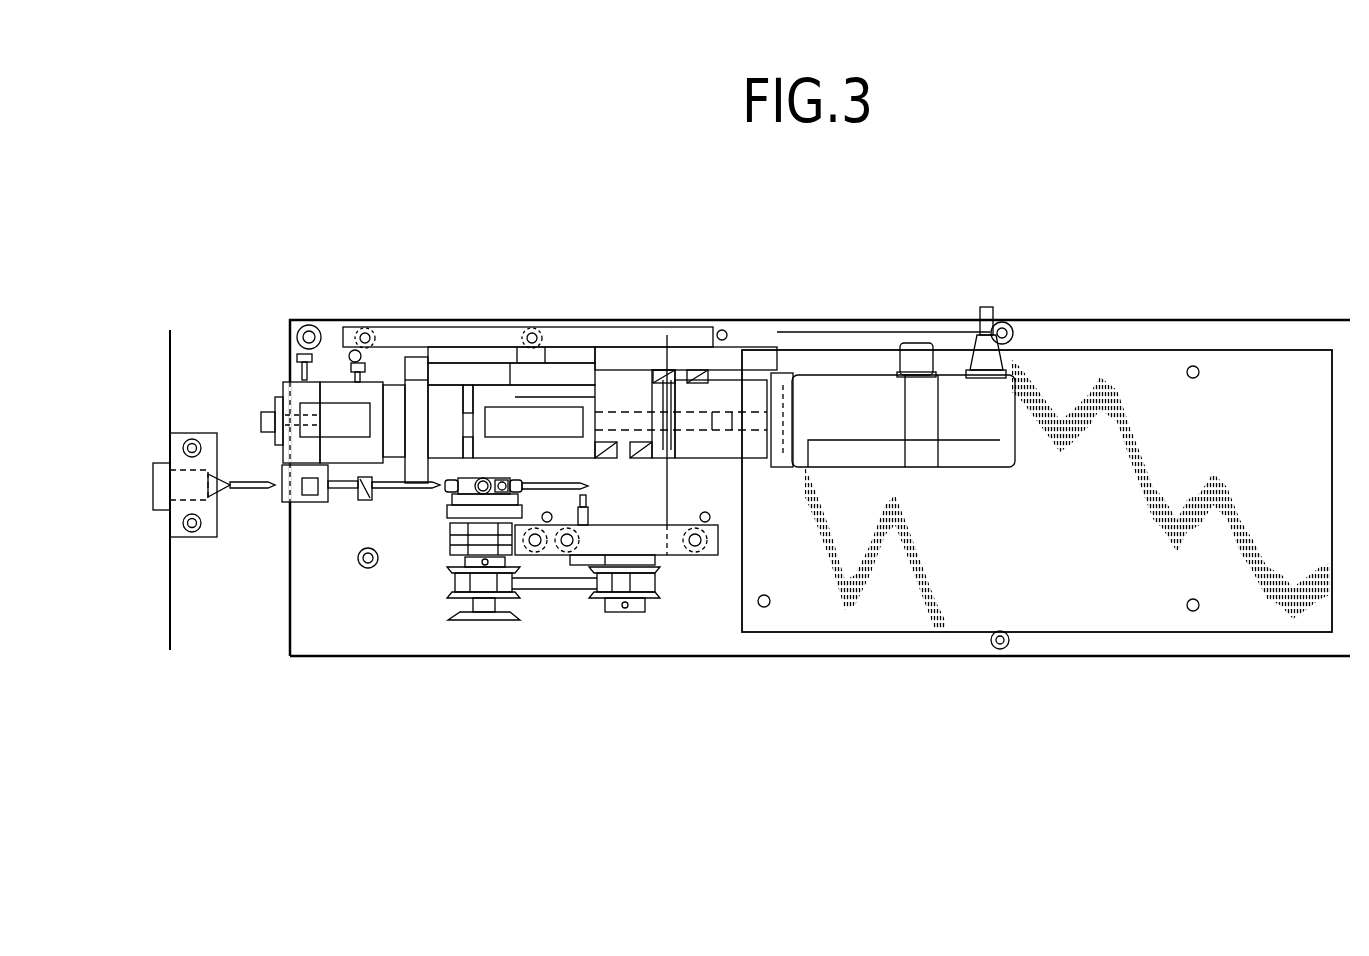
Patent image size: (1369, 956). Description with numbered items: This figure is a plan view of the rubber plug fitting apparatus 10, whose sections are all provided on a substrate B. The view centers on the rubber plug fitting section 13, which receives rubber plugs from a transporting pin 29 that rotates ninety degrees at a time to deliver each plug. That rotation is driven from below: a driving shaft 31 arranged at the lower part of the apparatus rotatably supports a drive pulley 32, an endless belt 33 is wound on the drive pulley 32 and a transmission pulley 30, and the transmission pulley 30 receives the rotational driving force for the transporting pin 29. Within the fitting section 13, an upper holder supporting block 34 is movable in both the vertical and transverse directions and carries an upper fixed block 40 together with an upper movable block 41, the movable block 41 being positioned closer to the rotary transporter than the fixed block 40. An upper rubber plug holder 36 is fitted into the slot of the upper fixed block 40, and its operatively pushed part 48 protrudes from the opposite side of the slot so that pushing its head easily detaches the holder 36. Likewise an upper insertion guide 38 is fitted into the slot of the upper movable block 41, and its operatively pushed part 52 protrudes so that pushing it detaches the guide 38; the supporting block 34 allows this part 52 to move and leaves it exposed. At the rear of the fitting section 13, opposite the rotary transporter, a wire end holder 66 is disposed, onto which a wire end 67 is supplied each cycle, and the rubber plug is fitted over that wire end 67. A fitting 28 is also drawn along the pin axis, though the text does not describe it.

The rubber plug fitting apparatus 10 is at (964, 276).
The rubber plug fitting section 13 is at (318, 530).
The substrate B is at (853, 645).
The wire end holder 66 is at (163, 520).
The wire end 67 is at (253, 492).
The upper fixed block 40 is at (305, 453).
The upper holder supporting block 34 is at (321, 376).
The operatively pushed part 52 is at (372, 410).
The upper movable block 41 is at (380, 455).
The operatively pushed part 48 is at (296, 365).
The upper rubber plug holder 36 is at (302, 507).
The transporting pin 29 is at (403, 491).
The upper insertion guide 38 is at (353, 500).
The fitting 28 is at (443, 498).
The transmission pulley 30 is at (520, 600).
The drive pulley 32 is at (650, 600).
The endless belt 33 is at (562, 585).
The driving shaft 31 is at (608, 548).